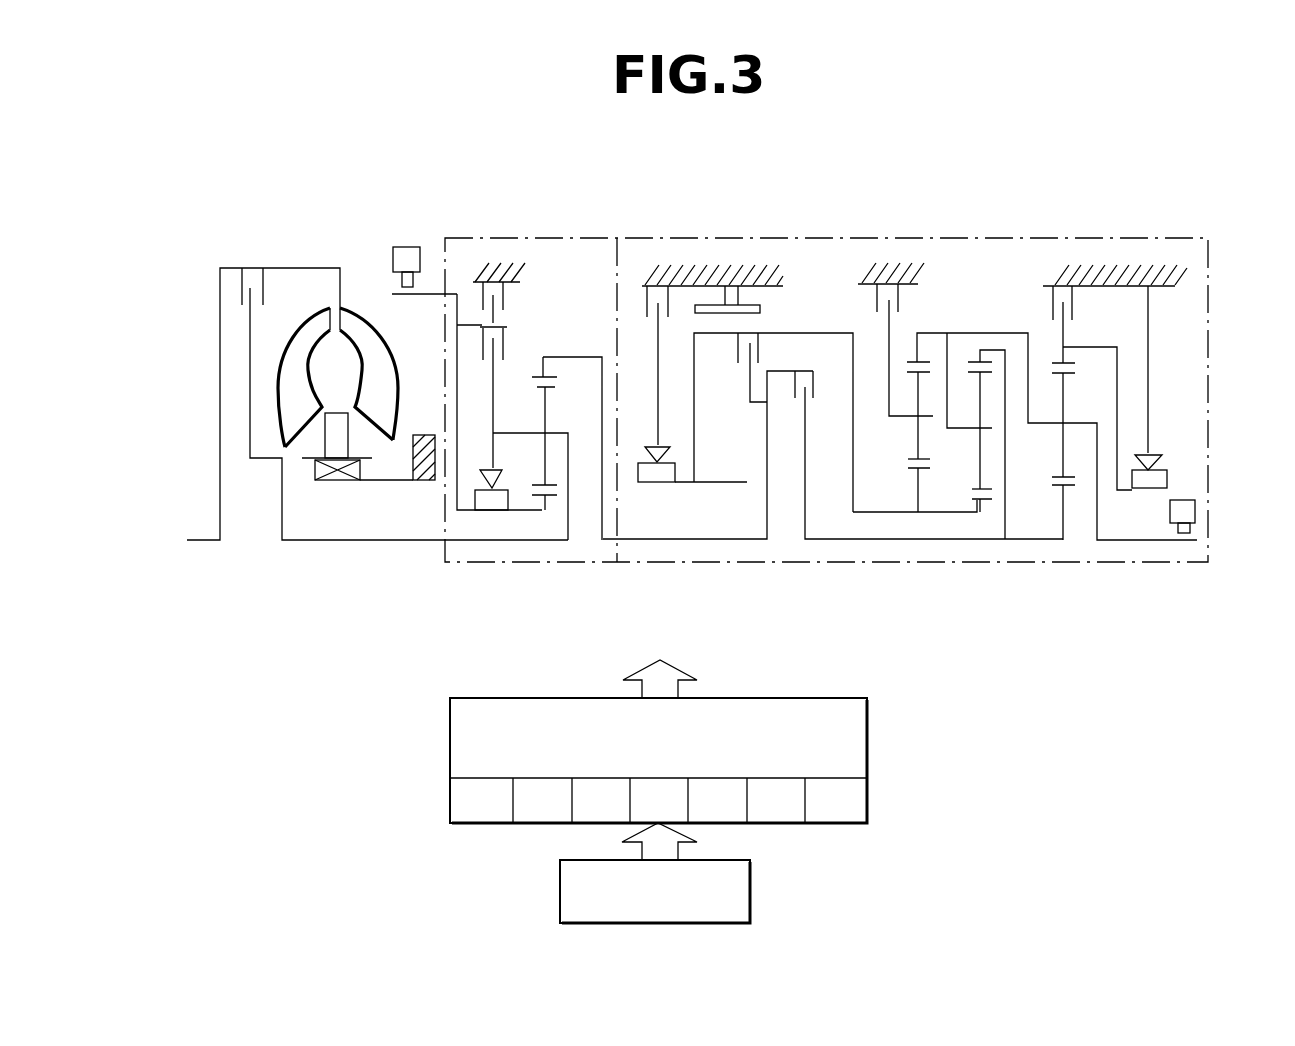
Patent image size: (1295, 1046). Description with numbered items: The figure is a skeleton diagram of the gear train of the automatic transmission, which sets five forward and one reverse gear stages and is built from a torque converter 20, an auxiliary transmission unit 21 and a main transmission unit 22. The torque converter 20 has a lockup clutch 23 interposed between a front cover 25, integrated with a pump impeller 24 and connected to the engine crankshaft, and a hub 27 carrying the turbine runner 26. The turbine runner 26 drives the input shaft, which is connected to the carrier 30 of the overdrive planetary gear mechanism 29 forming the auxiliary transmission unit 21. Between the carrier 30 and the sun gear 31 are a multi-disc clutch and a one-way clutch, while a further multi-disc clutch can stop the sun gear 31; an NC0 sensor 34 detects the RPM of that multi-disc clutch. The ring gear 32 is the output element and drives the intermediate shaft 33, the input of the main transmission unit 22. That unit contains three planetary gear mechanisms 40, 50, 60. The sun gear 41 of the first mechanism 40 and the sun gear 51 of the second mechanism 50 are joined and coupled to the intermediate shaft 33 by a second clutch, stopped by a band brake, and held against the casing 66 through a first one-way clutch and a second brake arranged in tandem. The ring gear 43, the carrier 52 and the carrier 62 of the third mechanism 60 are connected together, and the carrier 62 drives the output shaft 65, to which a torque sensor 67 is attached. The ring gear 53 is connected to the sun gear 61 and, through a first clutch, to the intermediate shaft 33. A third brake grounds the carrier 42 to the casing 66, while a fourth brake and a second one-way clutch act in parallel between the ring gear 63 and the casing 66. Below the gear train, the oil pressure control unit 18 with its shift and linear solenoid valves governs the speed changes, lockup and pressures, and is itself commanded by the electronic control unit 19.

The oil pressure control unit 18 is at (870, 762).
The automatic transmission electronic control unit 19 is at (753, 898).
The torque converter 20 is at (357, 262).
The auxiliary transmission unit 21 is at (577, 565).
The main transmission unit 22 is at (948, 237).
The lockup clutch 23 is at (242, 288).
The pump impeller 24 is at (380, 440).
The front cover 25 is at (218, 340).
The turbine runner 26 is at (308, 315).
The hub 27 is at (260, 462).
The overdrive planetary gear mechanism 29 is at (523, 520).
The carrier 30 is at (553, 433).
The sun gear 31 is at (548, 498).
The ring gear 32 is at (538, 372).
The intermediate shaft 33 is at (723, 540).
The NC0 sensor 34 is at (410, 246).
The first planetary gear mechanism 40 is at (910, 515).
The sun gear of first planetary gear mechanism 41 is at (912, 475).
The carrier of first planetary gear mechanism 42 is at (900, 418).
The ring gear of first planetary gear mechanism 43 is at (923, 362).
The second planetary gear mechanism 50 is at (983, 515).
The sun gear of second planetary gear mechanism 51 is at (970, 498).
The carrier of second planetary gear mechanism 52 is at (953, 432).
The ring gear of second planetary gear mechanism 53 is at (977, 362).
The third planetary gear mechanism 60 is at (1072, 530).
The sun gear of third planetary gear mechanism 61 is at (1057, 490).
The carrier of third planetary gear mechanism 62 is at (1085, 423).
The ring gear of third planetary gear mechanism 63 is at (1053, 362).
The output shaft 65 is at (1165, 542).
The casing 66 is at (698, 278).
The torque sensor 67 is at (1195, 513).